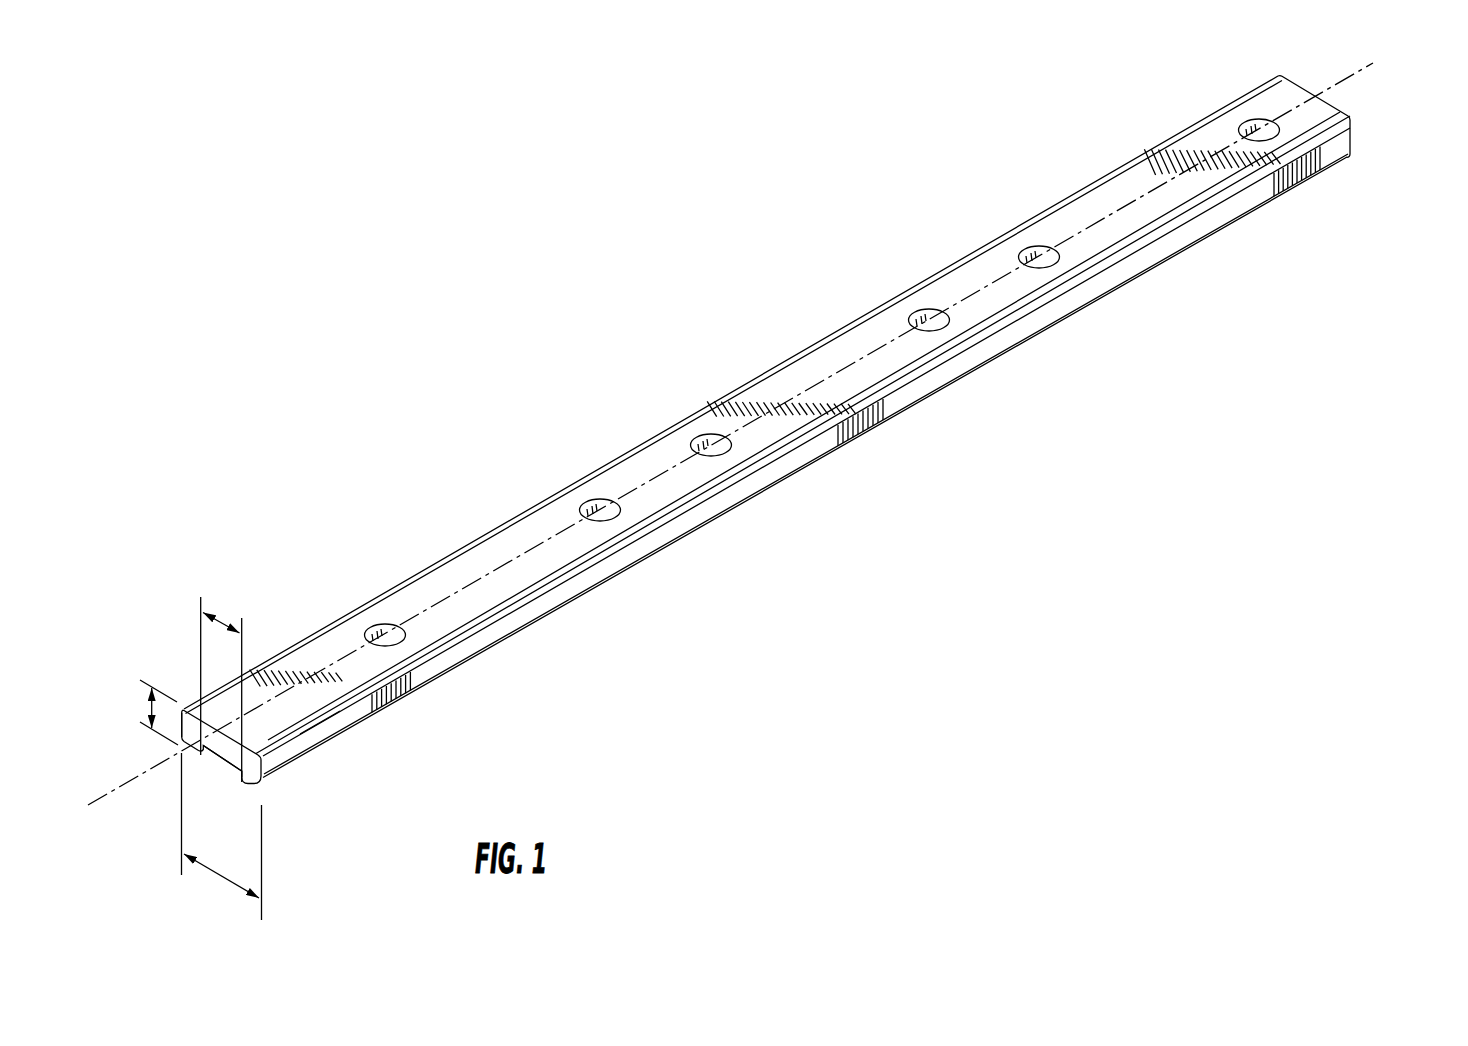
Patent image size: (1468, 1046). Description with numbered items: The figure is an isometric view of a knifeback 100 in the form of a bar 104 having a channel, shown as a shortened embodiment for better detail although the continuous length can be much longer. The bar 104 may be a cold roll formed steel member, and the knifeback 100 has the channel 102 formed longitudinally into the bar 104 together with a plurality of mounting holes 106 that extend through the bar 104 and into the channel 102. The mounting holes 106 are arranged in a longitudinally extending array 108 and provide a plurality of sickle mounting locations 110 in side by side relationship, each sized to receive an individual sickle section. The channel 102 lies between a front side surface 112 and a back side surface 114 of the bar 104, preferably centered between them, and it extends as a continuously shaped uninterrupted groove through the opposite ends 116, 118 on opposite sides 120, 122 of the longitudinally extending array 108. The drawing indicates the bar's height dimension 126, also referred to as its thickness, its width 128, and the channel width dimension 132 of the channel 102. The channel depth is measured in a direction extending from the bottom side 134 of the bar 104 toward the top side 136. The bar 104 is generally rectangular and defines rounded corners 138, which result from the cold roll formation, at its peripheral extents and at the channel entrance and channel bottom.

The knifeback 100 is at (768, 429).
The channel 102 is at (213, 764).
The bar 104 is at (815, 362).
The mounting holes 106 is at (390, 632).
The longitudinally extending array 108 is at (1363, 86).
The sickle mounting locations 110 is at (378, 624).
The front side surface 112 is at (362, 720).
The back side surface 114 is at (186, 708).
The end 116 is at (201, 732).
The end 118 is at (1352, 135).
The side 120 is at (253, 770).
The side 122 is at (1337, 111).
The height dimension 126 is at (147, 707).
The width 128 is at (217, 878).
The channel width dimension 132 is at (223, 618).
The bottom side 134 is at (638, 565).
The top side 136 is at (500, 545).
The rounded corners 138 is at (310, 728).